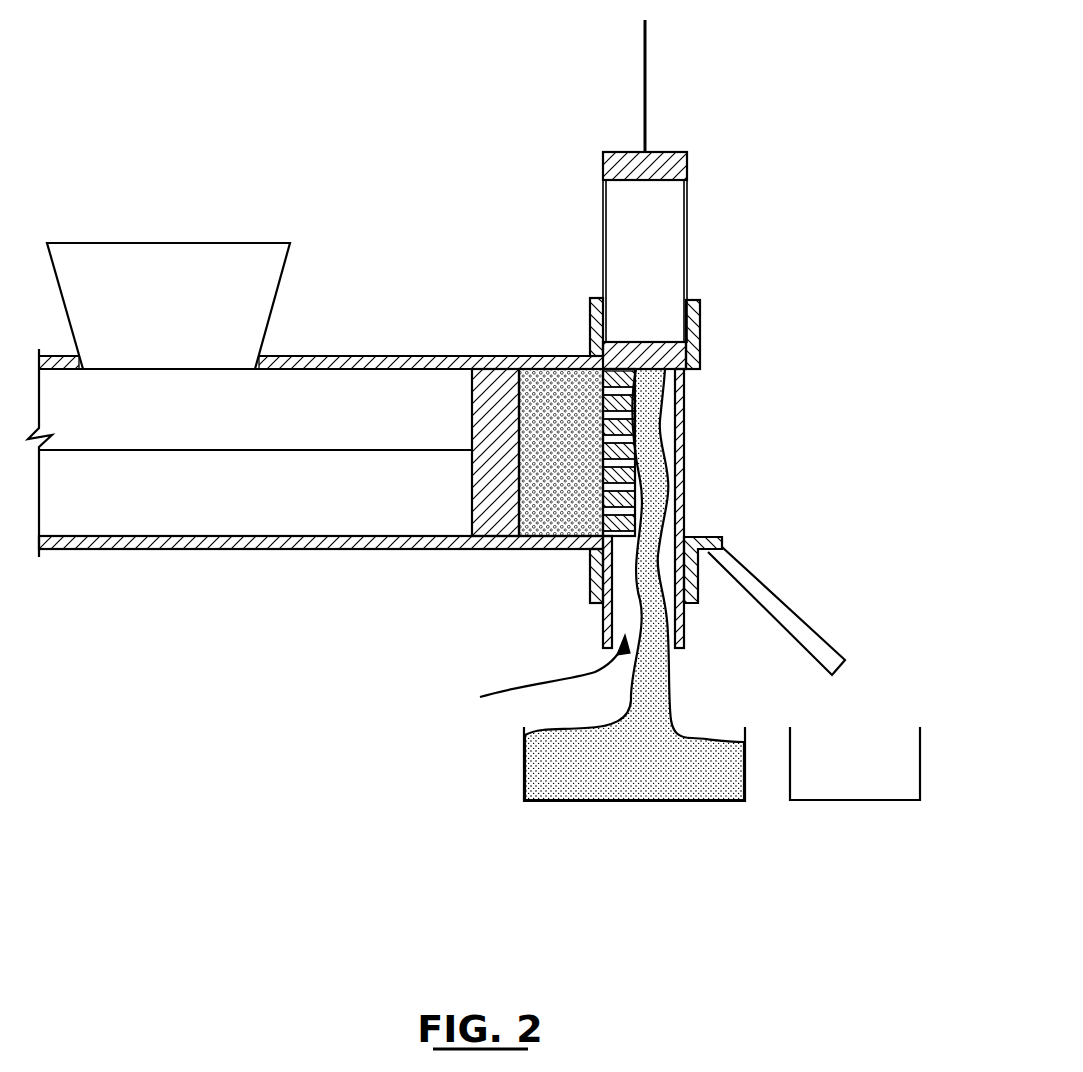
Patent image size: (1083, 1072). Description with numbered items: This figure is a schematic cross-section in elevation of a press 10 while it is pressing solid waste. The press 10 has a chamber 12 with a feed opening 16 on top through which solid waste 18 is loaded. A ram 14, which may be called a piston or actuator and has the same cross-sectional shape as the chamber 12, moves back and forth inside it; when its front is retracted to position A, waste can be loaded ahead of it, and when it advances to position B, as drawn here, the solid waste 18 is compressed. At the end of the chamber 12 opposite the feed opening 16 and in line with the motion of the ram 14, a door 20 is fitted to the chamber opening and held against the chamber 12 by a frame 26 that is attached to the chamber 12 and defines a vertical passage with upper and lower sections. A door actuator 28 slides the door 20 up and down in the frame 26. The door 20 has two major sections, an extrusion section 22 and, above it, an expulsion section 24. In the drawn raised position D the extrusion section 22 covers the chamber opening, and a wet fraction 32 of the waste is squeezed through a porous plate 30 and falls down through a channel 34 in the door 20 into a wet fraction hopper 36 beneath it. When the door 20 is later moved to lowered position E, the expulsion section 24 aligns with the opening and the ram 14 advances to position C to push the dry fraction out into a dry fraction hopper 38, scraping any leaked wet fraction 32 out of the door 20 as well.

The press 10 is at (236, 752).
The chamber 12 is at (376, 356).
The ram 14 is at (492, 520).
The feed opening 16 is at (284, 270).
The solid waste 18 is at (543, 385).
The door 20 is at (687, 258).
The extrusion section 22 is at (683, 463).
The expulsion section 24 is at (685, 237).
The frame 26 is at (600, 326).
The door actuator 28 is at (645, 77).
The porous plate 30 is at (623, 419).
The wet fraction 32 is at (606, 337).
The channel 34 is at (534, 678).
The wet fraction hopper 36 is at (607, 801).
The dry fraction hopper 38 is at (840, 801).
The retracted position A is at (91, 557).
The compression position B is at (567, 553).
The expulsion position C is at (745, 598).
The raised position D is at (705, 153).
The lowered position E is at (705, 343).